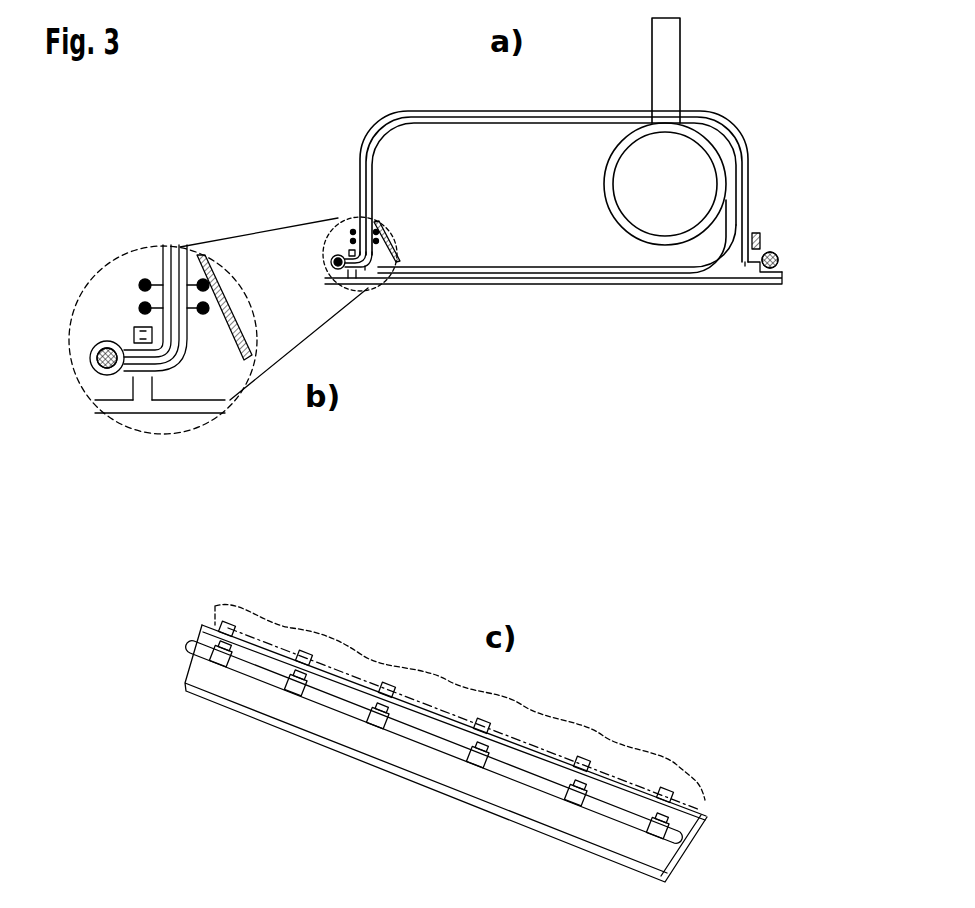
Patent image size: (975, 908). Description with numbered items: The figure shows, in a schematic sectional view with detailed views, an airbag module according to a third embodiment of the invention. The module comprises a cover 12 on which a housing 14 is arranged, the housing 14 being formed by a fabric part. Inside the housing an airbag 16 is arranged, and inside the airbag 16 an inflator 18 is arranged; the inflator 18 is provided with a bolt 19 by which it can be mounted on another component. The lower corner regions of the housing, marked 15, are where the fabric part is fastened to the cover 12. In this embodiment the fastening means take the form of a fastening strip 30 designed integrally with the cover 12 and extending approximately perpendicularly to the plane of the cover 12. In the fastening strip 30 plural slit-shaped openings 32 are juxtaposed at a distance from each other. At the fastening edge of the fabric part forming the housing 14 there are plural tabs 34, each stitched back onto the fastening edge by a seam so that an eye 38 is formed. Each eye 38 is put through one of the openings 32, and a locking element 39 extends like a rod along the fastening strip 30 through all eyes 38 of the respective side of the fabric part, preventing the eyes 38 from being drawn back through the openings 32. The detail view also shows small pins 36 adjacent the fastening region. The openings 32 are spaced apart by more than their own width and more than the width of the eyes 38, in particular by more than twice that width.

The cover 12 is at (660, 286).
The housing 14 is at (748, 192).
The housing bottom corner 15 is at (745, 264).
The airbag 16 is at (230, 300).
The inflator 18 is at (697, 128).
The bolt 19 is at (670, 35).
The fastening strip 30 is at (135, 333).
The openings 32 is at (152, 372).
The tabs 34 is at (752, 233).
The pin 36 is at (757, 243).
The eye 38 is at (779, 257).
The locking element 39 is at (97, 357).